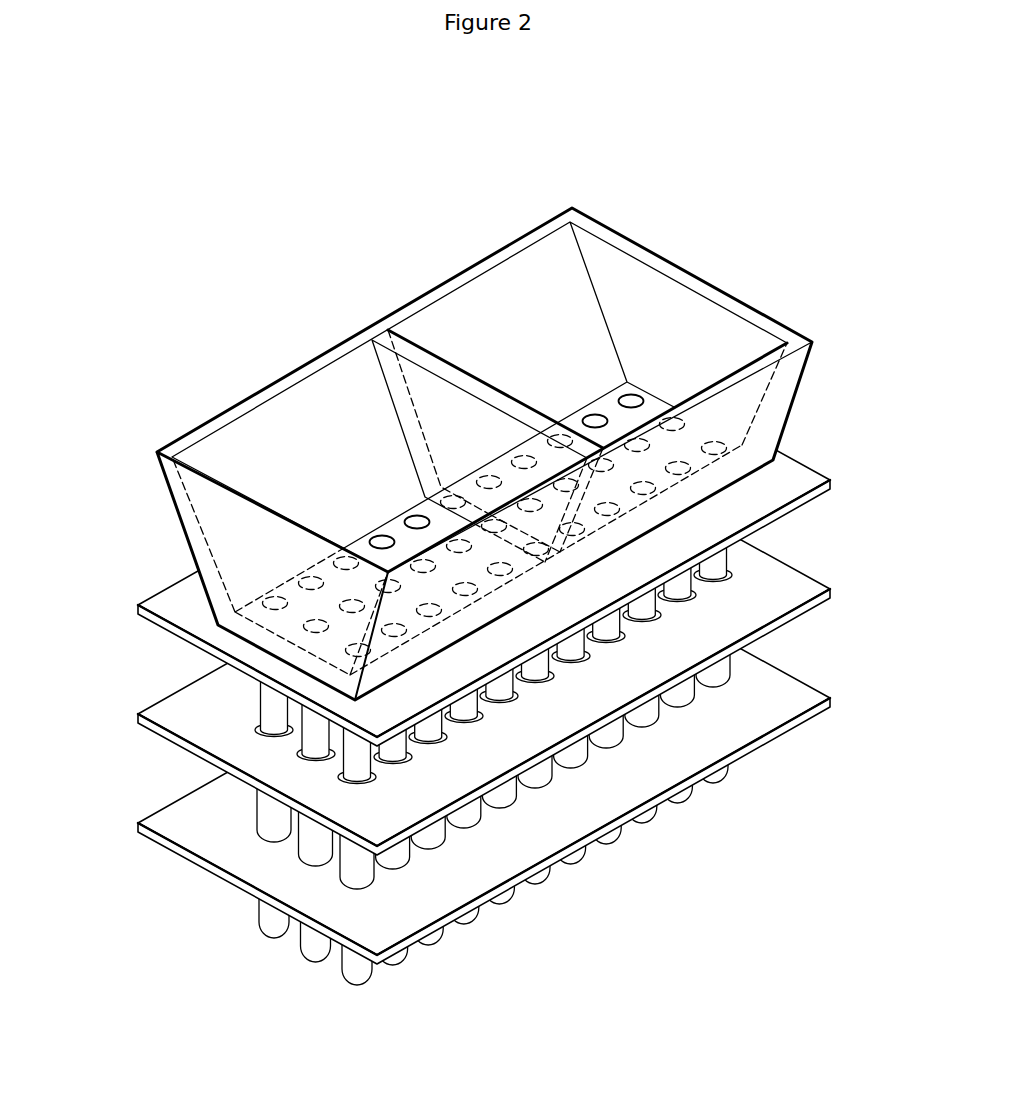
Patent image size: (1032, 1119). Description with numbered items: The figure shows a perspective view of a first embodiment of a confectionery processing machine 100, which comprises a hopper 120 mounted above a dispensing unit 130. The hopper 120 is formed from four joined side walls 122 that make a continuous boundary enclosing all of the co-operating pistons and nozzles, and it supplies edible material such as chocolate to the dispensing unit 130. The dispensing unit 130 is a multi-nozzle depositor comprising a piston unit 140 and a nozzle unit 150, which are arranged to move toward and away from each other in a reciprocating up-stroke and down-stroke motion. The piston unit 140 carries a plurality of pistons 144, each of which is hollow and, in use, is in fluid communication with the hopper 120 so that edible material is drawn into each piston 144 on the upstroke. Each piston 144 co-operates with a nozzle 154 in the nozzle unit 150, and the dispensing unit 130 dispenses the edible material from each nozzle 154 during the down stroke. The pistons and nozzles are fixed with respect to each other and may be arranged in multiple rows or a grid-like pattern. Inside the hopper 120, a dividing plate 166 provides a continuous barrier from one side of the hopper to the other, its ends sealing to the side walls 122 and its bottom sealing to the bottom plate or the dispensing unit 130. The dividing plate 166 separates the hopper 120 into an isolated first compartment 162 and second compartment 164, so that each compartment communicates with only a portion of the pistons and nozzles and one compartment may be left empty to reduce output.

The confectionery processing machine 100 is at (262, 195).
The hopper 120 is at (545, 234).
The side walls 122 is at (232, 405).
The dispensing unit 130 is at (457, 666).
The piston unit 140 is at (825, 570).
The pistons 144 is at (307, 725).
The nozzle unit 150 is at (748, 617).
The nozzles 154 is at (308, 838).
The first compartment 162 is at (370, 468).
The second compartment 164 is at (575, 370).
The dividing plate 166 is at (402, 347).